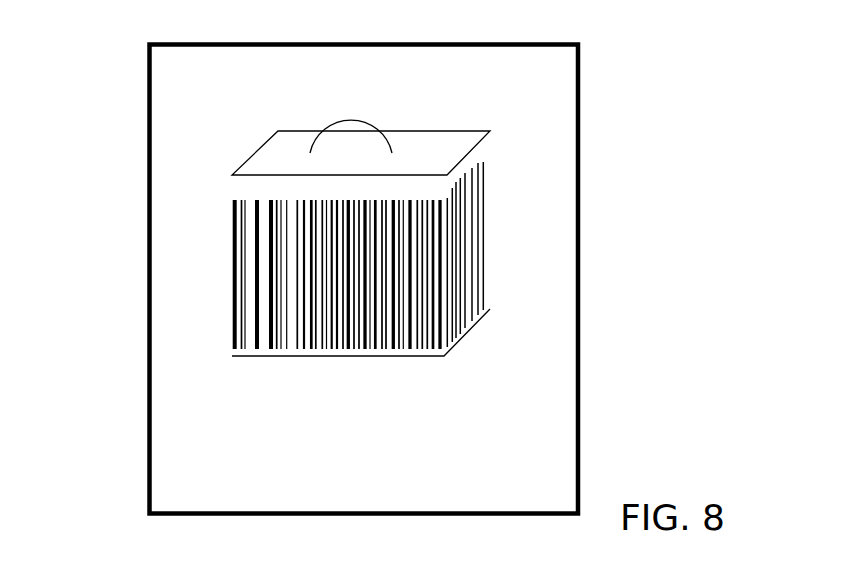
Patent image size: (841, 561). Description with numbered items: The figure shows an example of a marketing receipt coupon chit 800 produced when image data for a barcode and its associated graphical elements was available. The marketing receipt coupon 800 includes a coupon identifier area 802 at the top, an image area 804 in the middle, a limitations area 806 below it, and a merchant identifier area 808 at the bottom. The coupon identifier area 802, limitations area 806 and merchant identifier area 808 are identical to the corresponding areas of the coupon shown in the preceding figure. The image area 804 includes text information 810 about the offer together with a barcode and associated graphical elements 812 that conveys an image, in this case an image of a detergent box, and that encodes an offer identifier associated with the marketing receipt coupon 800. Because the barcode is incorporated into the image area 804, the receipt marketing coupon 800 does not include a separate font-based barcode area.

The marketing receipt coupon chit 800 is at (617, 88).
The coupon identifier area 802 is at (285, 63).
The image area 804 is at (247, 238).
The limitations area 806 is at (202, 394).
The merchant identifier area 808 is at (265, 473).
The text information 810 is at (280, 98).
The barcode and associated graphical elements 812 is at (225, 301).